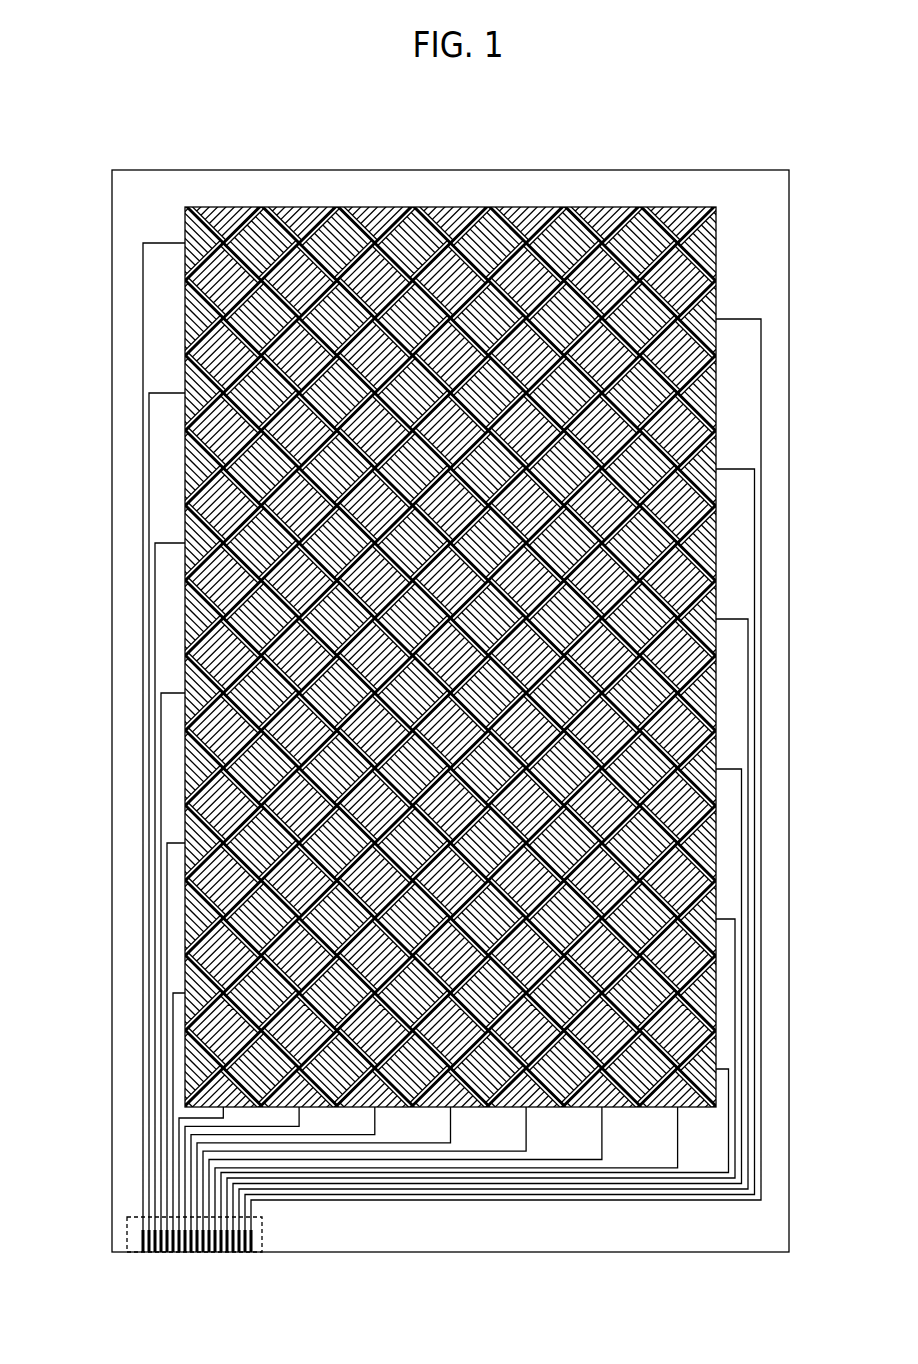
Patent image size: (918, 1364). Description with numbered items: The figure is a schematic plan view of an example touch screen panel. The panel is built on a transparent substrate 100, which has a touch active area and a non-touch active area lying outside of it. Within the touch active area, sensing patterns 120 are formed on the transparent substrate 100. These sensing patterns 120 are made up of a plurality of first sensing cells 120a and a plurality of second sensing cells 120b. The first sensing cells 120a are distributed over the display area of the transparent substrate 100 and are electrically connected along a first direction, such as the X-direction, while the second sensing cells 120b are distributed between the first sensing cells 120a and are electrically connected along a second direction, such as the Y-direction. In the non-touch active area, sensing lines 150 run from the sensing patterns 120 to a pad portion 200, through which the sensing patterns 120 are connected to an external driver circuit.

The transparent substrate 100 is at (590, 169).
The sensing patterns 120 is at (451, 607).
The first sensing cells 120a is at (263, 230).
The second sensing cells 120b is at (221, 263).
The sensing lines 150 is at (143, 288).
The pad portion 200 is at (262, 1232).